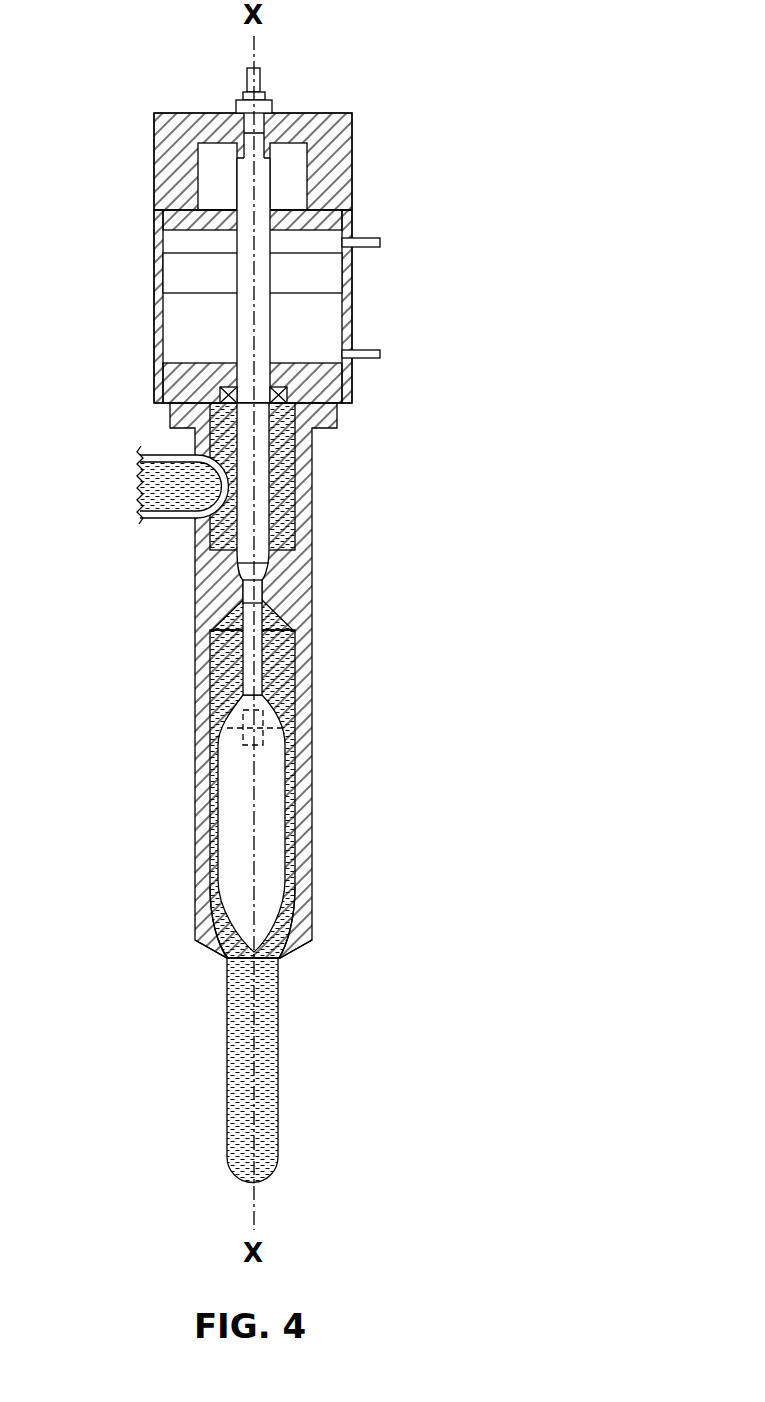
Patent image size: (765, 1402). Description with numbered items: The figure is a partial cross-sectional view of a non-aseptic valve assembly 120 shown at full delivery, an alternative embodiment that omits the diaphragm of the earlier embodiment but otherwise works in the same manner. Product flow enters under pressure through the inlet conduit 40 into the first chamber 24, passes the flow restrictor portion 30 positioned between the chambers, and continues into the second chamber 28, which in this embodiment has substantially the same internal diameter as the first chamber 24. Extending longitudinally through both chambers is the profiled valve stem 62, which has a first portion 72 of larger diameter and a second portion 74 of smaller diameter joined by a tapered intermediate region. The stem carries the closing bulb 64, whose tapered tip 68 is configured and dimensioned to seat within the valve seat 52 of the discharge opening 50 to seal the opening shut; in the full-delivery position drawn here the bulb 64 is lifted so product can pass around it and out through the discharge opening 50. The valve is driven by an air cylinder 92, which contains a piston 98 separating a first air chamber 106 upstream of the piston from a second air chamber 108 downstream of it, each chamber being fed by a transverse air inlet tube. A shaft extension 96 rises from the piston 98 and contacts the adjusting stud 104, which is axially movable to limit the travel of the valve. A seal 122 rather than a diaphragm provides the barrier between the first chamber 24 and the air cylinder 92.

The non-aseptic valve assembly 120 is at (502, 88).
The shaft extension 96 is at (245, 190).
The adjusting stud 104 is at (257, 147).
The piston 98 is at (190, 265).
The first air chamber 106 is at (317, 242).
The air cylinder 92 is at (190, 333).
The second air chamber 108 is at (317, 337).
The seal 122 is at (287, 388).
The inlet conduit 40 is at (145, 483).
The first internal chamber 24 is at (254, 476).
The valve stem 62 is at (255, 555).
The first portion 72 is at (242, 530).
The flow restrictor portion 30 is at (293, 585).
The second internal chamber 28 is at (292, 678).
The second portion 74 is at (252, 680).
The closing bulb 64 is at (265, 858).
The tip 68 is at (252, 948).
The valve seat 52 is at (280, 958).
The discharge opening 50 is at (240, 962).